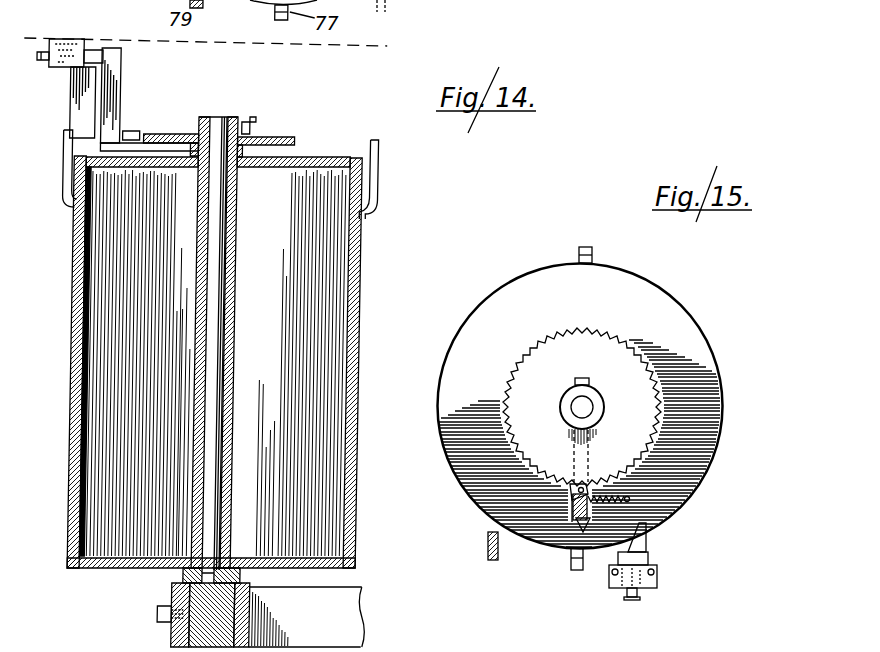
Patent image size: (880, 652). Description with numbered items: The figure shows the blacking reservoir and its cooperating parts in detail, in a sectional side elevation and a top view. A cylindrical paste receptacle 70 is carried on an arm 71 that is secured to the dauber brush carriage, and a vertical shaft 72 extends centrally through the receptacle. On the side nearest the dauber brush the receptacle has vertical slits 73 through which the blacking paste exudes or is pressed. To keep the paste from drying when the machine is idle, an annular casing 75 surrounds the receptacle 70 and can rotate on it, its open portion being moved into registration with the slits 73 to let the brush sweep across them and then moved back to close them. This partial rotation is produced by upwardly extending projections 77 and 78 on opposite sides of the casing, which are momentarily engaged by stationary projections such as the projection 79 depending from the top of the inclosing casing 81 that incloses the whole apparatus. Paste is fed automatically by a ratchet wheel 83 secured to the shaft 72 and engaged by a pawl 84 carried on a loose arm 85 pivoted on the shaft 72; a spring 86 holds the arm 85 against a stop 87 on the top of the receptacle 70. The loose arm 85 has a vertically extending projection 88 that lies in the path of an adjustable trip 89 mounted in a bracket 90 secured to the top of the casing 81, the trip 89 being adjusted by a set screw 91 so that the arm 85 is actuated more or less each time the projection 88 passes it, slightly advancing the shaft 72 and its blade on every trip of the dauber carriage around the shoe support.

In FIG. 14, the paste receptacle 70 is at (88, 410).
In FIG. 14, the arm 71 is at (353, 623).
In FIG. 14, the vertical shaft 72 is at (213, 358).
In FIG. 15, the vertical shaft 72 is at (580, 406).
In FIG. 14, the vertical slits 73 is at (380, 158).
In FIG. 14, the annular casing 75 is at (360, 398).
In FIG. 14, the upwardly extending projection 77 is at (64, 143).
In FIG. 15, the upwardly extending projection 77 is at (577, 574).
In FIG. 15, the upwardly extending projection 78 is at (591, 245).
In FIG. 14, the stationary projection 79 is at (71, 103).
In FIG. 15, the stationary projection 79 is at (495, 562).
In FIG. 14, the inclosing casing 81 is at (102, 50).
In FIG. 14, the ratchet wheel 83 is at (277, 137).
In FIG. 15, the ratchet wheel 83 is at (604, 405).
In FIG. 14, the pawl 84 is at (145, 134).
In FIG. 15, the pawl 84 is at (569, 490).
In FIG. 14, the loose arm 85 is at (126, 131).
In FIG. 15, the loose arm 85 is at (572, 512).
In FIG. 15, the spring 86 is at (629, 501).
In FIG. 15, the stop 87 is at (586, 524).
In FIG. 14, the vertically extending projection 88 is at (116, 87).
In FIG. 15, the vertically extending projection 88 is at (575, 516).
In FIG. 15, the adjustable trip 89 is at (648, 549).
In FIG. 14, the bracket 90 is at (55, 39).
In FIG. 15, the bracket 90 is at (657, 578).
In FIG. 14, the set screw 91 is at (38, 63).
In FIG. 15, the set screw 91 is at (633, 600).